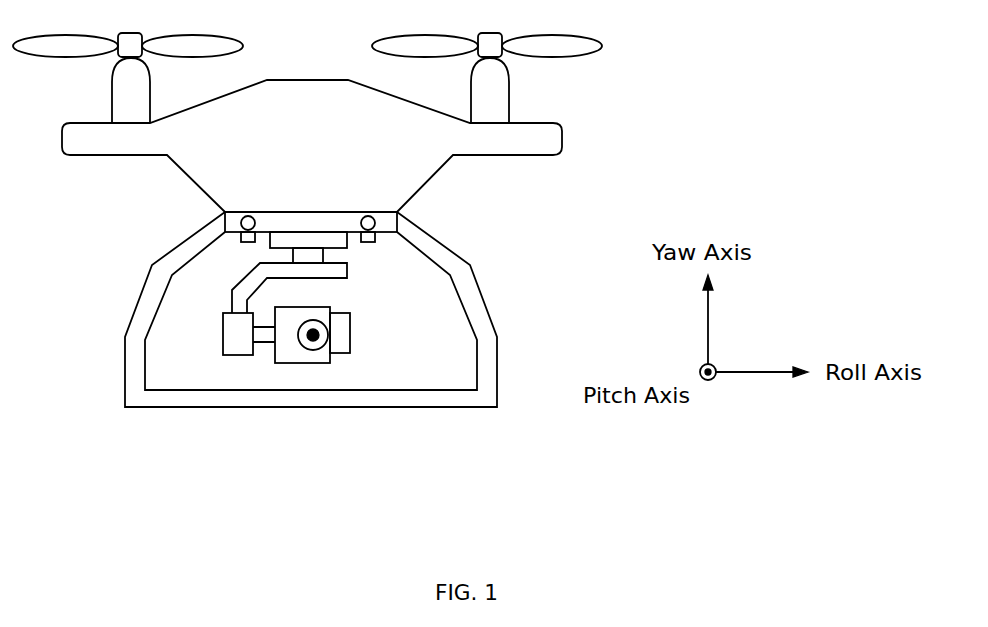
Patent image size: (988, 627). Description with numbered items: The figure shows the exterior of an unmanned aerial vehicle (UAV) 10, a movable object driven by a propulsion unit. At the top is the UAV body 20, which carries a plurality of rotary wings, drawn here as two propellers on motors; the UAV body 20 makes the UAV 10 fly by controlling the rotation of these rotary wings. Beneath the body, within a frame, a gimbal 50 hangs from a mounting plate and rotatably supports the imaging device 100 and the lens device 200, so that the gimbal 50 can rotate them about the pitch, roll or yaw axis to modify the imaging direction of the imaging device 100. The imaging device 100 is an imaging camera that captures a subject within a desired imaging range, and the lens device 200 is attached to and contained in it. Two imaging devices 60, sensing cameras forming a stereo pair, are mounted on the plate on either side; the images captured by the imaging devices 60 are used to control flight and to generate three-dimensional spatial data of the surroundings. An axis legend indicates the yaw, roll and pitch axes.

The unmanned aerial vehicle (UAV) 10 is at (652, 114).
The UAV body 20 is at (307, 85).
The gimbal 50 is at (237, 280).
The imaging devices 60 is at (245, 243).
The imaging device 100 is at (303, 363).
The lens device 200 is at (342, 353).